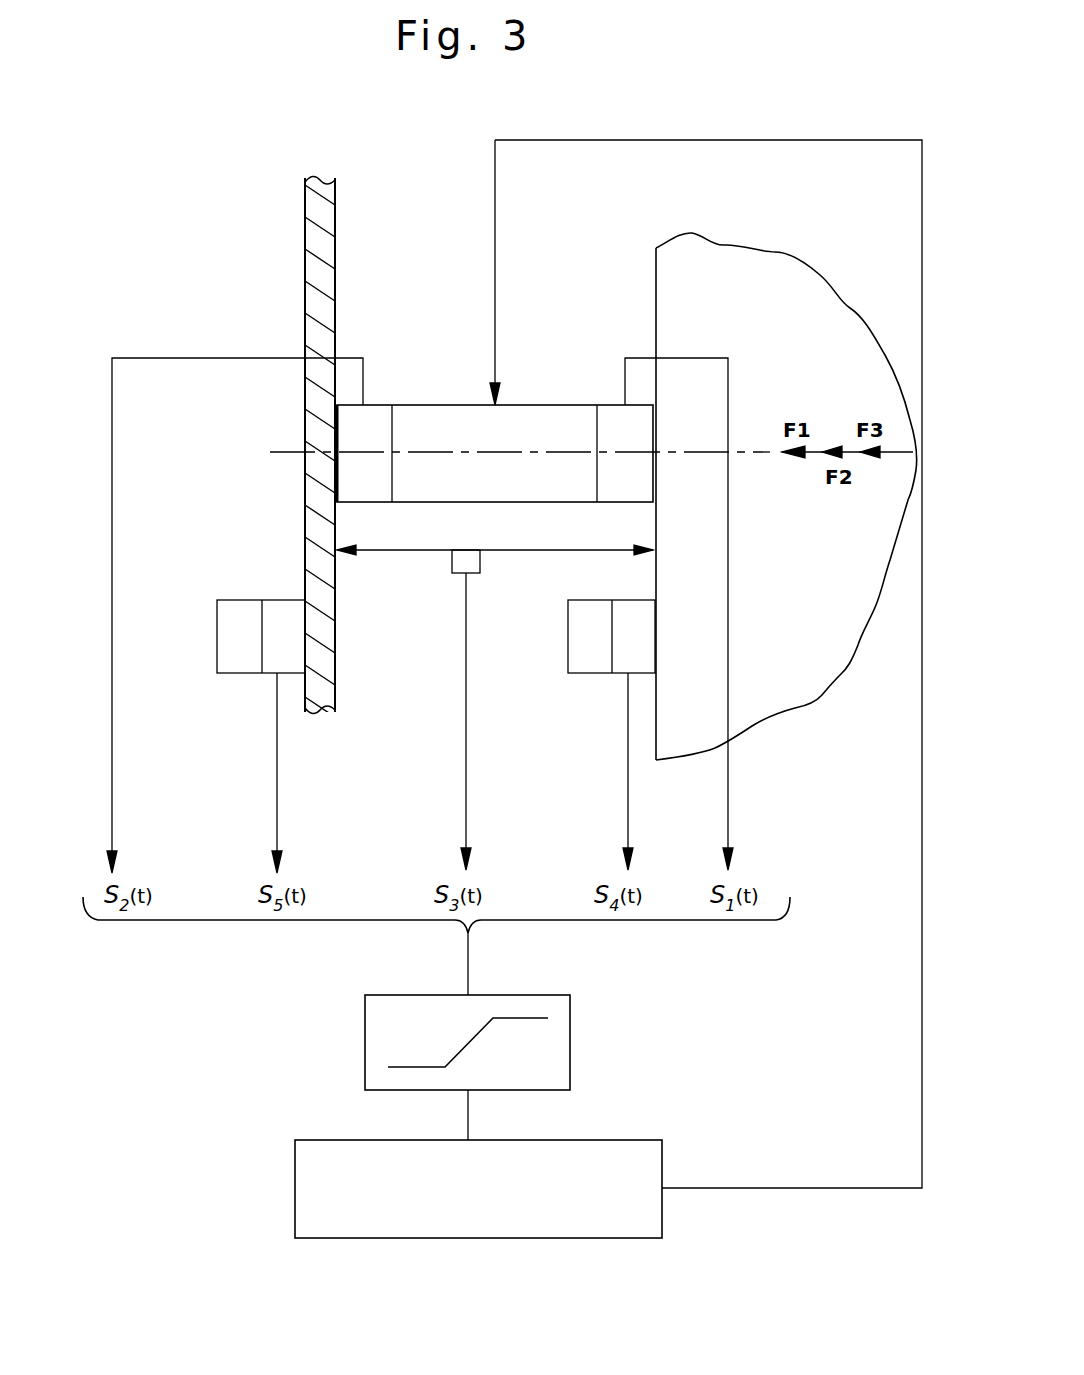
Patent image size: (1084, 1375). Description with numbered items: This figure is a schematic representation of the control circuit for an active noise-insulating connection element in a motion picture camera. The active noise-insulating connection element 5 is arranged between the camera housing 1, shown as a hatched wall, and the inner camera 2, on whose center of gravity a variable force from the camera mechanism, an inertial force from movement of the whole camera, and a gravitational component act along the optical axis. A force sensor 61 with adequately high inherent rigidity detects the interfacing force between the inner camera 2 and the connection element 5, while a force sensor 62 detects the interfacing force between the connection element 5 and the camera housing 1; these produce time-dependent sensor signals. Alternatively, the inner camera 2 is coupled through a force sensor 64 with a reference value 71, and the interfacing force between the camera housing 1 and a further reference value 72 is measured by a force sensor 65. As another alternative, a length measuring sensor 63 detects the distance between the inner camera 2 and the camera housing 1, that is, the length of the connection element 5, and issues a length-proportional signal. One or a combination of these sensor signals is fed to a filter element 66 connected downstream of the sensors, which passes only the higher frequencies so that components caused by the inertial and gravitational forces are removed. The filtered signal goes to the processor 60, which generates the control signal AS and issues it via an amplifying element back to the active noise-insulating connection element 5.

The camera housing 1 is at (305, 297).
The inner camera 2 is at (760, 276).
The active noise-insulating connection element 5 is at (464, 415).
The processor 60 is at (615, 1223).
The force sensor 61 is at (611, 416).
The force sensor 62 is at (375, 413).
The length measuring sensor 63 is at (481, 567).
The force sensor 64 is at (642, 624).
The force sensor 65 is at (285, 614).
The filter element 66 is at (560, 1030).
The reference value 71 is at (568, 660).
The reference value 72 is at (207, 630).
The control signal AS is at (496, 258).